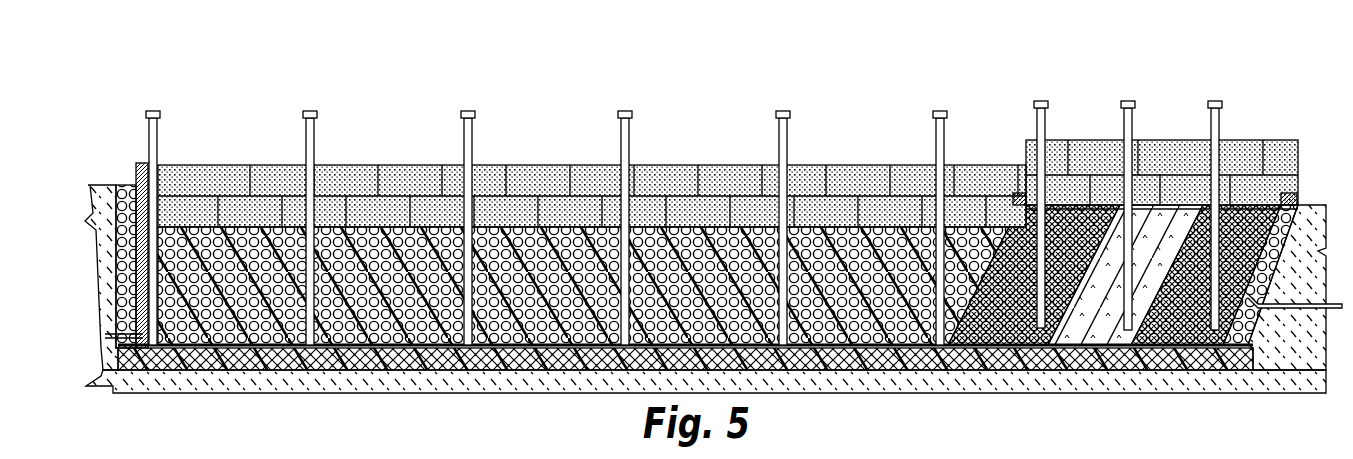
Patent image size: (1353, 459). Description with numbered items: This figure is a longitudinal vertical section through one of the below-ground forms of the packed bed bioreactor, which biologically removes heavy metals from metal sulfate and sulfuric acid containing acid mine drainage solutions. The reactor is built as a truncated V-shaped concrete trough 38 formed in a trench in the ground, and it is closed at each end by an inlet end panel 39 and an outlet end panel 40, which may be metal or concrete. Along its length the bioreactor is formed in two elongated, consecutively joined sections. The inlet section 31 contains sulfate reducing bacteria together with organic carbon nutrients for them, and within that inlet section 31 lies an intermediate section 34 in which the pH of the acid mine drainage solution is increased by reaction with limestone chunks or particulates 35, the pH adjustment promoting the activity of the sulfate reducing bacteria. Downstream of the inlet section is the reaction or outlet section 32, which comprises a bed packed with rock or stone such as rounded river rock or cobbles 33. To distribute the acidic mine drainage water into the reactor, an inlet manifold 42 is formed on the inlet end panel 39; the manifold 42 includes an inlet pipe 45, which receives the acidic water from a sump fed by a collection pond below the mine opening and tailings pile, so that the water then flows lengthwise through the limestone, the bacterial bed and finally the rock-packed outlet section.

The inlet section 31 is at (1079, 124).
The outlet section 32 is at (484, 386).
The cobbles 33 is at (562, 332).
The intermediate section 34 is at (1073, 343).
The limestone chunks or particulates 35 is at (1150, 233).
The concrete trough 38 is at (912, 340).
The inlet end panel 39 is at (1289, 197).
The outlet end panel 40 is at (132, 155).
The inlet manifold 42 is at (1205, 340).
The inlet pipe 45 is at (1277, 302).